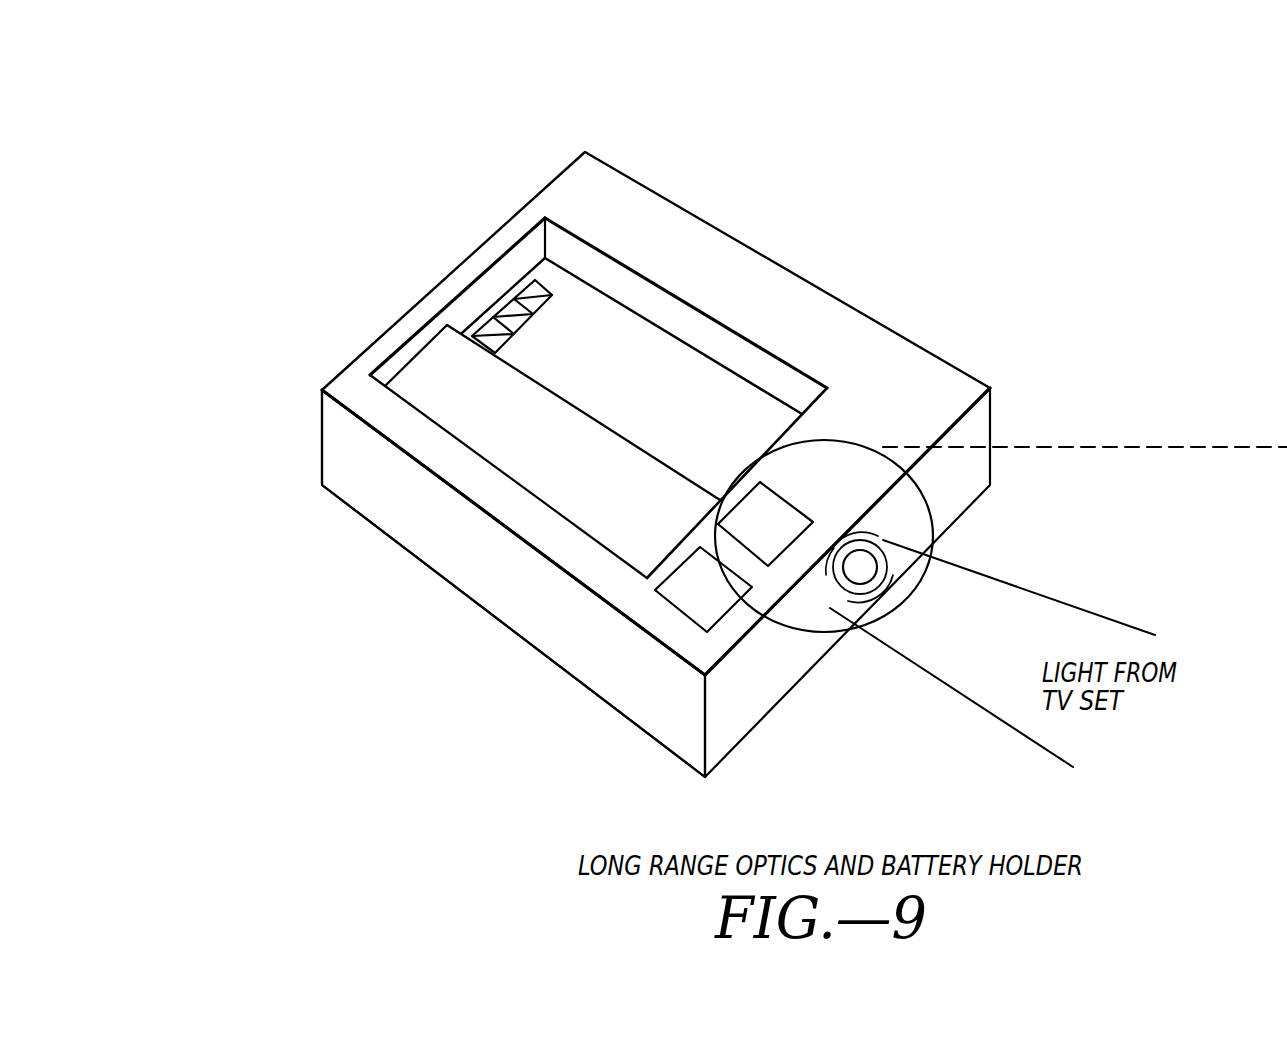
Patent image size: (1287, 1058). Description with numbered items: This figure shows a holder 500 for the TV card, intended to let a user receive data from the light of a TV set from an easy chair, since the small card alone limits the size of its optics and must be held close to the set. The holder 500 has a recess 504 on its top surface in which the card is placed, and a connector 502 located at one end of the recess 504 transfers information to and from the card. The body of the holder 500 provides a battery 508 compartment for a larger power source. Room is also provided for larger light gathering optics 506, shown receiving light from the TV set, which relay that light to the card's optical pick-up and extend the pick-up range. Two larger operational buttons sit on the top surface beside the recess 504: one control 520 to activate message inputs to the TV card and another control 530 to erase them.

The holder 500 is at (907, 343).
The connector 502 is at (548, 287).
The recess 504 is at (618, 422).
The light gathering optics 506 is at (860, 568).
The battery 508 is at (465, 600).
The activate control 520 is at (687, 605).
The erase control 530 is at (803, 520).